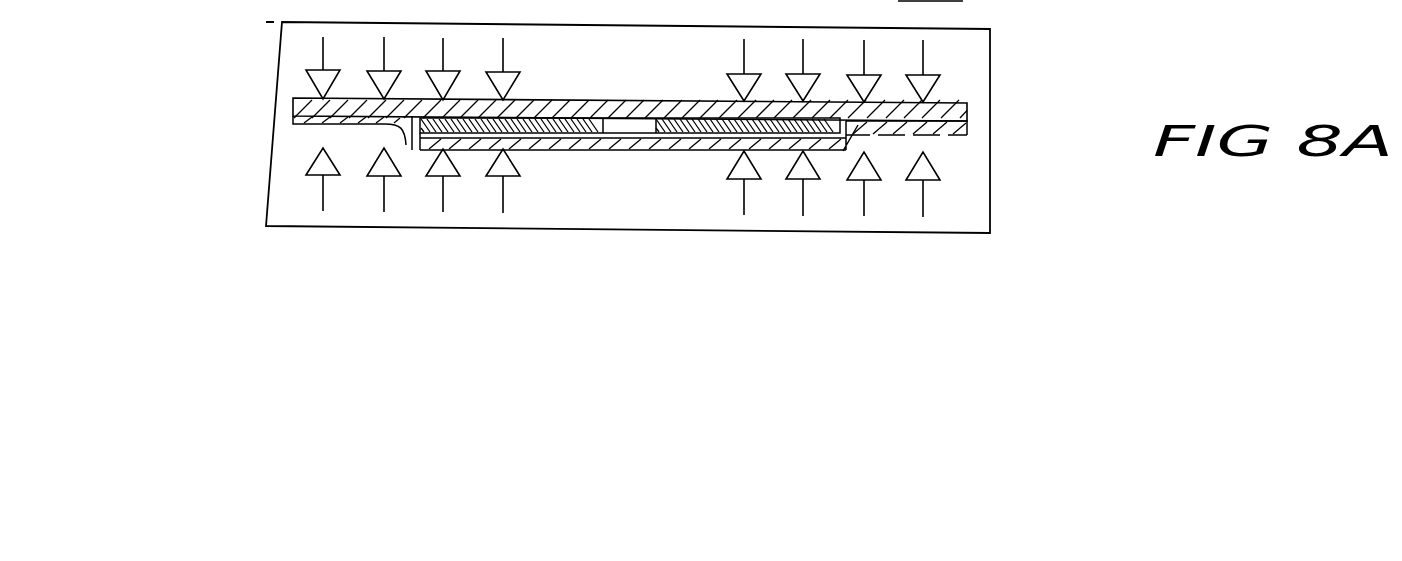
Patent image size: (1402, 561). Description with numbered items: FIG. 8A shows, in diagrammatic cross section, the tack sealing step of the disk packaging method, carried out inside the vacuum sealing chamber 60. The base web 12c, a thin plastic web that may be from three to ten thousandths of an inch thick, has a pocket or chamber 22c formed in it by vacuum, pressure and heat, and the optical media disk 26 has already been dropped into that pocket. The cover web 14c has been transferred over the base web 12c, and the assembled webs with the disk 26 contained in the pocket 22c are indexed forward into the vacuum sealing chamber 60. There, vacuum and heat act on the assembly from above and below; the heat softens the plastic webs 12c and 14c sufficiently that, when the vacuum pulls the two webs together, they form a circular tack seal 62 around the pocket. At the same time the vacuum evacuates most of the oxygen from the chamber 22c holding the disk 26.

The vacuum sealing chamber 60 is at (315, 227).
The cover web 14c is at (293, 100).
The base web 12c is at (293, 119).
The pocket or chamber 22c is at (412, 150).
The optical media disk 26 is at (543, 135).
The tack seal 62 is at (412, 116).